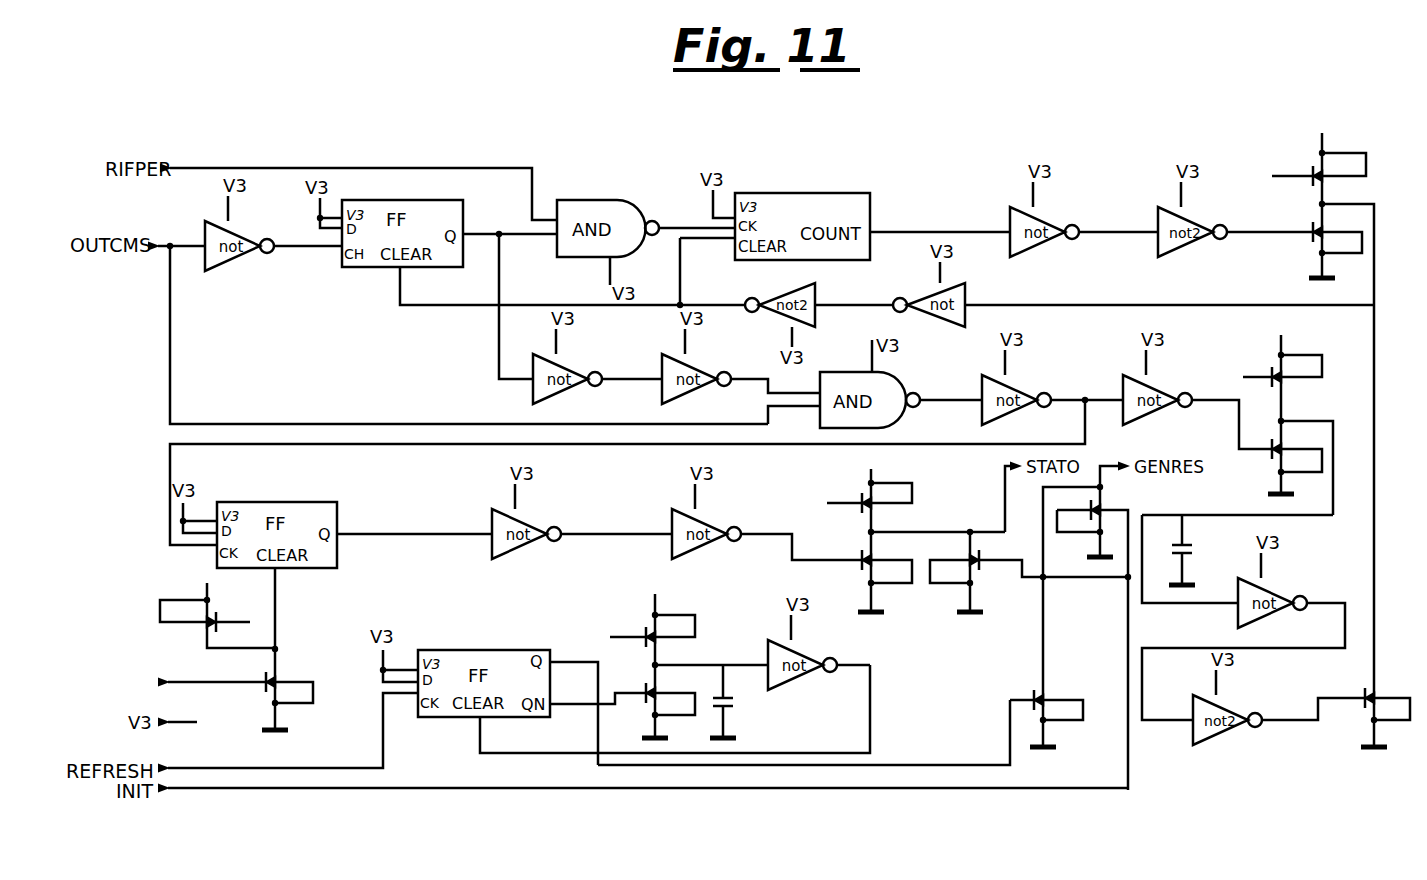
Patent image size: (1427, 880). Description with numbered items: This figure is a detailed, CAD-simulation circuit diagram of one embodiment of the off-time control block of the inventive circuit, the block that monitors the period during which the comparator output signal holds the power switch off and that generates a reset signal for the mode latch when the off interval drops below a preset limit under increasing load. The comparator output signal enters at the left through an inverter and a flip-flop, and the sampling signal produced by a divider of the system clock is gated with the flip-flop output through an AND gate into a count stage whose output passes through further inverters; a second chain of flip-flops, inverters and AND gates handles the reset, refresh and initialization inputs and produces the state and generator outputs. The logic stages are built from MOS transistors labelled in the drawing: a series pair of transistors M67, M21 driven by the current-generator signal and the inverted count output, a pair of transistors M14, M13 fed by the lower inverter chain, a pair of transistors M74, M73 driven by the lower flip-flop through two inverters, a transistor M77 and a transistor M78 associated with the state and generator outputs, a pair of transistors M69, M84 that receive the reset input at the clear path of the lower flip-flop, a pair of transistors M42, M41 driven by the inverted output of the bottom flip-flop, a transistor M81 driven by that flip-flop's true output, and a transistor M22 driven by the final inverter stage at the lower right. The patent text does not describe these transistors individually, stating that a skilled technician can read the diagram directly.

The transistor M67 is at (1294, 157).
The transistor M21 is at (1327, 449).
The transistor M14 is at (1281, 367).
The transistor M13 is at (1287, 466).
The transistor M74 is at (869, 490).
The transistor M73 is at (827, 572).
The transistor M77 is at (1029, 572).
The transistor M78 is at (1091, 637).
The transistor M69 is at (217, 606).
The transistor M84 is at (208, 688).
The transistor M42 is at (652, 620).
The transistor M41 is at (656, 700).
The transistor M81 is at (840, 718).
The transistor M22 is at (1372, 708).